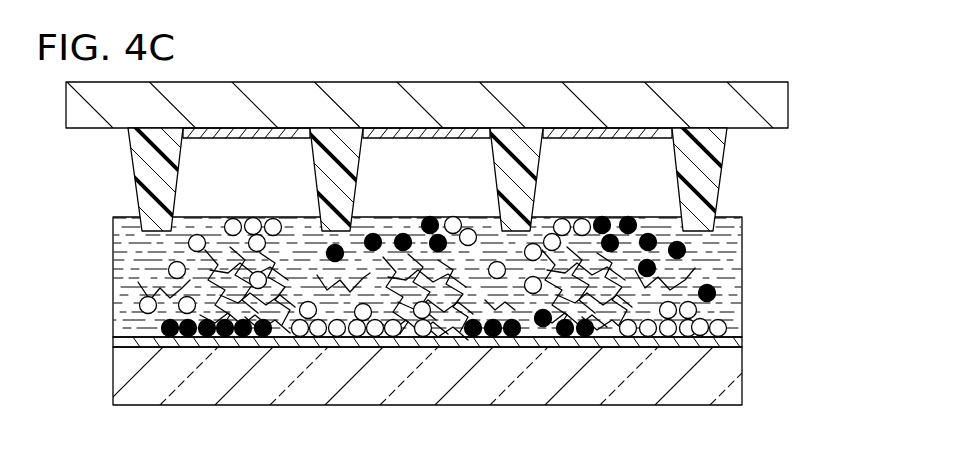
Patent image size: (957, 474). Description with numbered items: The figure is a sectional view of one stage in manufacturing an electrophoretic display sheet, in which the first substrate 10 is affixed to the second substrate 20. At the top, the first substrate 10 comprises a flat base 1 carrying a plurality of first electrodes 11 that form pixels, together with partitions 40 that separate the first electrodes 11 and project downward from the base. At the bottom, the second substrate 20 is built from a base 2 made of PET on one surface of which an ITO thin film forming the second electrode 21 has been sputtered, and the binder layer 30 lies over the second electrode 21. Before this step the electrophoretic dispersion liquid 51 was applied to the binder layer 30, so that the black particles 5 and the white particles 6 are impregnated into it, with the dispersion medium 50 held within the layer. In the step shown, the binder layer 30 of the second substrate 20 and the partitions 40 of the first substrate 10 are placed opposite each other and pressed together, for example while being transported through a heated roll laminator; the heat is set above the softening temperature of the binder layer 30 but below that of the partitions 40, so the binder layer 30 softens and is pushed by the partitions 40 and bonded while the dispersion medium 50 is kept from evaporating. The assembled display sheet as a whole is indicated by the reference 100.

The flat base 1 is at (752, 101).
The first electrodes 11 is at (687, 148).
The first substrate 10 is at (473, 123).
The partitions 40 is at (708, 188).
The binder layer 30 is at (700, 267).
The black particles 5 is at (515, 330).
The dispersion medium 50 is at (527, 312).
The white particles 6 is at (628, 330).
The electrophoretic dispersion liquid 51 is at (635, 453).
The second electrode 21 is at (710, 351).
The base 2 is at (707, 390).
The second substrate 20 is at (493, 373).
The device 100 is at (456, 278).